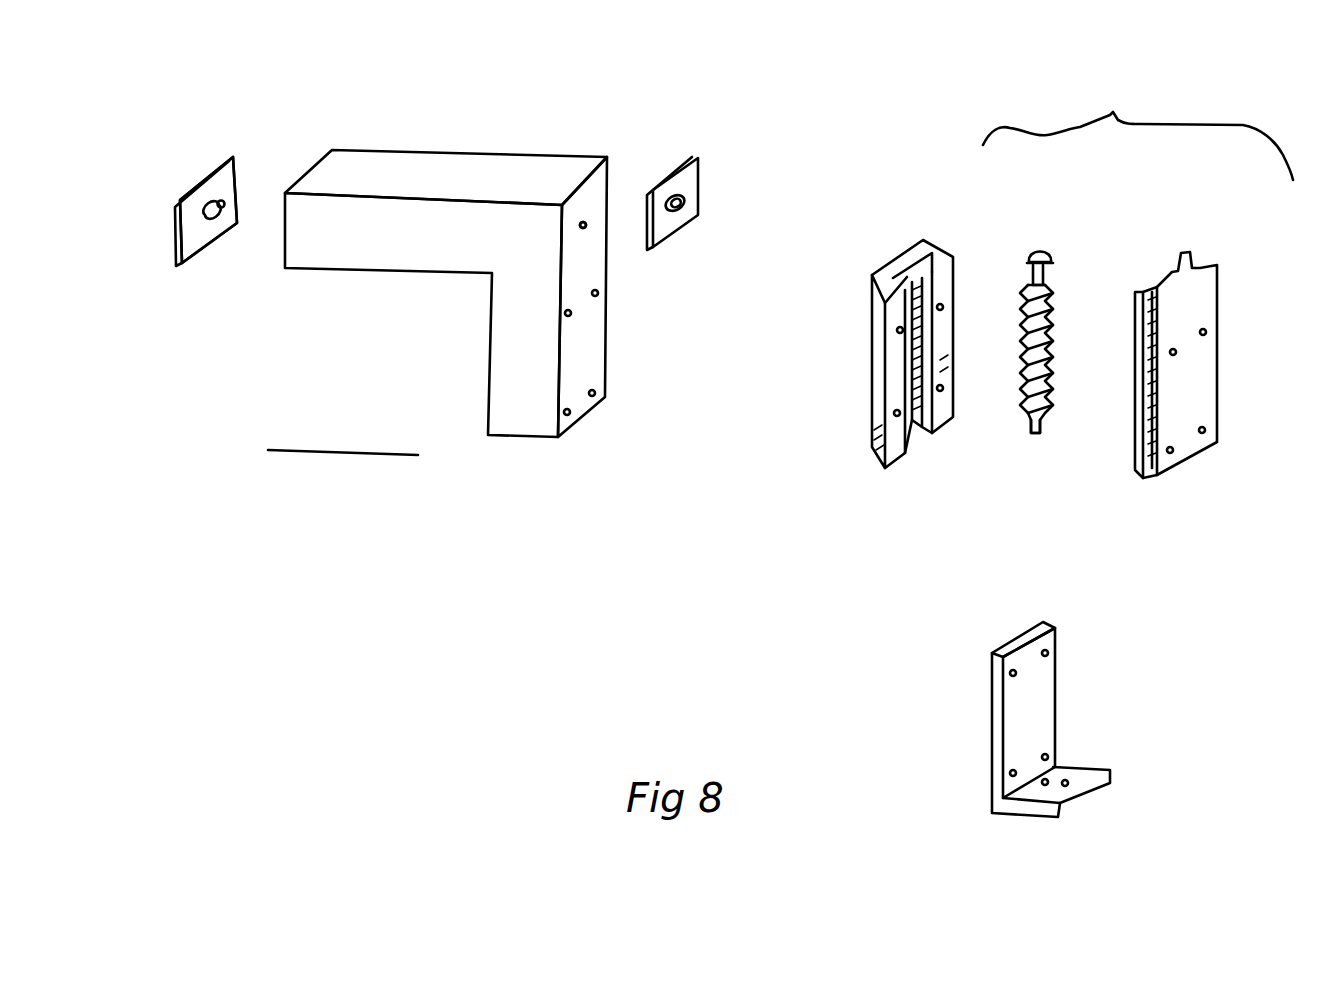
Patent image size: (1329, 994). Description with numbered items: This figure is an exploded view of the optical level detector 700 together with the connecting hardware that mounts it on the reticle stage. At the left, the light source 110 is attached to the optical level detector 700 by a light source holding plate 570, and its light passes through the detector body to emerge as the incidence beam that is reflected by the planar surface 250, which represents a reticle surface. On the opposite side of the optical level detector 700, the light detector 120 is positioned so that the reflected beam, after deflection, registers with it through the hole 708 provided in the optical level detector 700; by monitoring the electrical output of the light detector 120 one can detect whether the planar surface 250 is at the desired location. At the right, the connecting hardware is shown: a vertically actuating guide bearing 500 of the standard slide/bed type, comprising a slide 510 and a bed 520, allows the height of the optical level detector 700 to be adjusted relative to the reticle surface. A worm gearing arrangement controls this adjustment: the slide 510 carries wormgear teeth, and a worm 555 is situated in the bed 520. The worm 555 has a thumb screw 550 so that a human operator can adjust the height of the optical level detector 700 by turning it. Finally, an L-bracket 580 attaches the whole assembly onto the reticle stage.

The light source holding plate 570 is at (222, 155).
The light source 110 is at (236, 165).
The optical level detector 700 is at (537, 158).
The hole 708 is at (597, 212).
The light detector 120 is at (699, 183).
The planar surface 250 is at (300, 452).
The vertically actuating guide bearing 500 is at (1138, 122).
The bed 520 is at (937, 250).
The thumb screw 550 is at (1047, 252).
The worm 555 is at (1023, 407).
The slide 510 is at (1220, 277).
The L-bracket 580 is at (1048, 692).